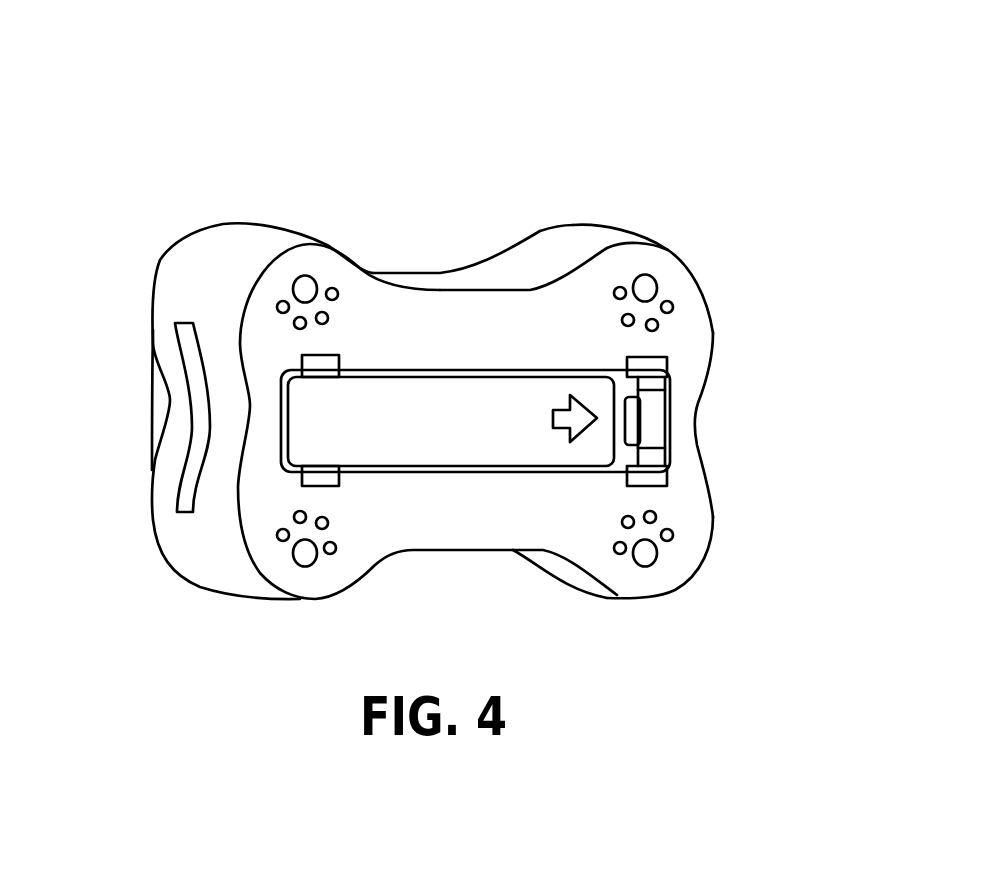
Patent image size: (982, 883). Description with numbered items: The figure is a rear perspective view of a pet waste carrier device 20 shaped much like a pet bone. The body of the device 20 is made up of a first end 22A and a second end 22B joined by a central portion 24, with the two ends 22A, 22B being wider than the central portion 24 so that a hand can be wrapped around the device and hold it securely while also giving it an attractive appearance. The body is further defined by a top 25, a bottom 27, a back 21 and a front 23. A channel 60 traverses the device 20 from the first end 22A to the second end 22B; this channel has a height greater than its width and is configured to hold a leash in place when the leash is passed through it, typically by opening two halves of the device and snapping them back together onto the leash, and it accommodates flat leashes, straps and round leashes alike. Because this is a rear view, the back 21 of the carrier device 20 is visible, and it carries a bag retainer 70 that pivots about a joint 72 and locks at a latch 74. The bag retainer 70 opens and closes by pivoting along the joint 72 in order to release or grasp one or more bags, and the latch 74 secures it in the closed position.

The pet carrier device 20 is at (515, 77).
The back 21 is at (356, 298).
The first end 22A is at (153, 343).
The second end 22B is at (713, 337).
The front 23 is at (163, 258).
The central portion 24 is at (414, 270).
The top 25 is at (587, 226).
The bottom 27 is at (642, 598).
The channel 60 is at (197, 425).
The bag retainer 70 is at (465, 455).
The joint 72 is at (317, 437).
The latch 74 is at (647, 413).